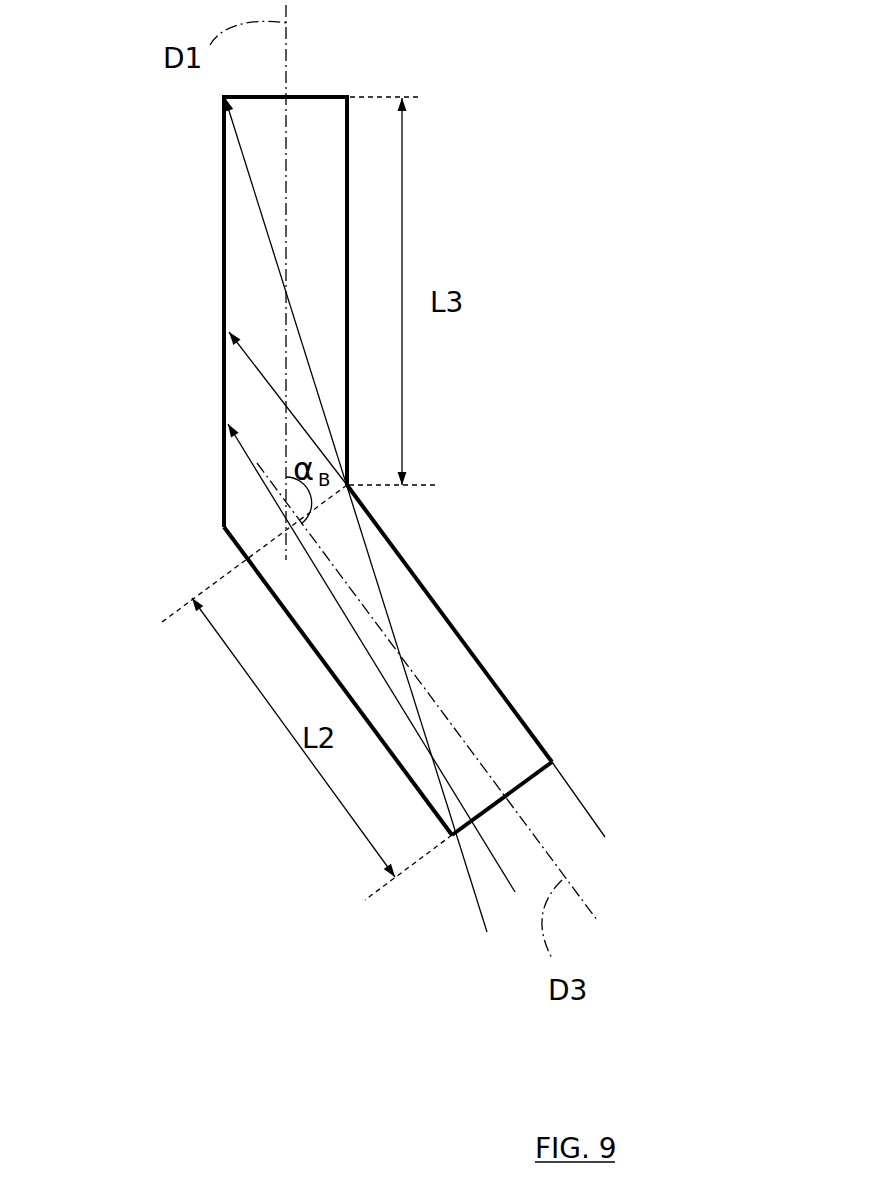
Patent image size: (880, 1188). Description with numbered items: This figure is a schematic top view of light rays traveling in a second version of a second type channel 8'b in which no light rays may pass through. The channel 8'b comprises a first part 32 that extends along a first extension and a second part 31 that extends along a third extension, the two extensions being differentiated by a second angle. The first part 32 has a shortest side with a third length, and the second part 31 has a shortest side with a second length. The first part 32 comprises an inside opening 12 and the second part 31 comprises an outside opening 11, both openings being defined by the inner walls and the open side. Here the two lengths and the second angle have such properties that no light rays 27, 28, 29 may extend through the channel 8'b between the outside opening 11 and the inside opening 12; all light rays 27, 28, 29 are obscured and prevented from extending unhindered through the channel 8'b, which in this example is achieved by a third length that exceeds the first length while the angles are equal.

The second version of a second type channel 8'b is at (483, 439).
The outside opening 11 is at (527, 785).
The inside opening 12 is at (327, 97).
The light ray 27 is at (250, 177).
The light ray 28 is at (272, 383).
The light ray 29 is at (267, 493).
The second part 31 is at (430, 590).
The first part 32 is at (225, 293).